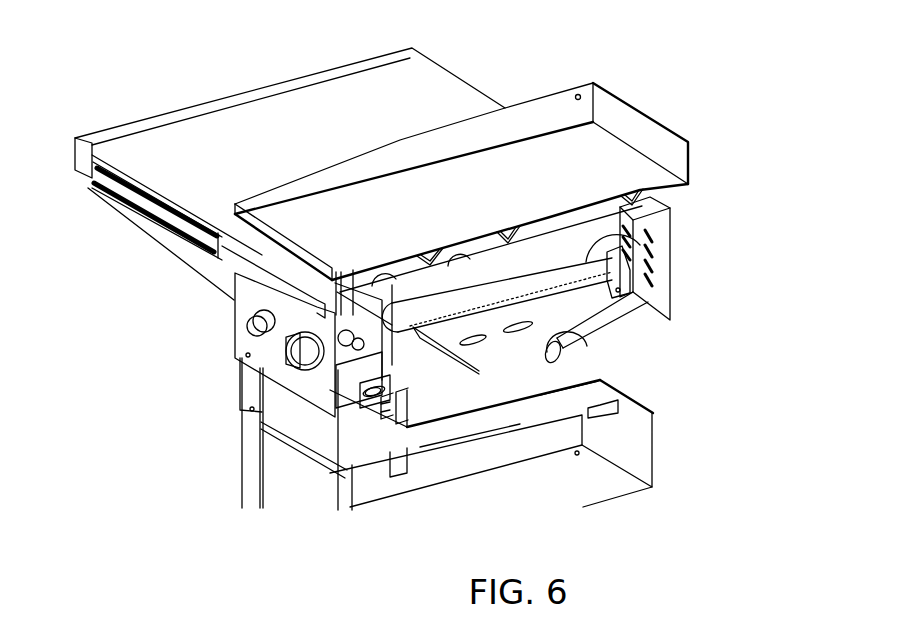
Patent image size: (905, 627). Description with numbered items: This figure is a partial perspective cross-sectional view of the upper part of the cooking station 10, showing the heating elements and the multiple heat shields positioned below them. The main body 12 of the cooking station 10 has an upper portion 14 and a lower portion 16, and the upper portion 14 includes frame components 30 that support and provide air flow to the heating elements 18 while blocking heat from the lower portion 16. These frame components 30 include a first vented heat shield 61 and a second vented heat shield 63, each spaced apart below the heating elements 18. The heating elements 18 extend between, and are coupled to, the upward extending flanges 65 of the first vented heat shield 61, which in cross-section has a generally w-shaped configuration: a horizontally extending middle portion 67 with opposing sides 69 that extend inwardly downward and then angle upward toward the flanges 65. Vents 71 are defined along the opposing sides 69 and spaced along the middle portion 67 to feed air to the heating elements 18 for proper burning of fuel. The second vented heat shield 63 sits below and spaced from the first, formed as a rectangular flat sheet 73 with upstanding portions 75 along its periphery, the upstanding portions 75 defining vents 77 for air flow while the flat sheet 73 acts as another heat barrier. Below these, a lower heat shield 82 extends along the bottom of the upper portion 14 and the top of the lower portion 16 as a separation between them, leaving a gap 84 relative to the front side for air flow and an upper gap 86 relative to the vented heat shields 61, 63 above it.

The cooking station 10 is at (714, 62).
The main body 12 is at (725, 138).
The upper portion 14 is at (227, 268).
The lower portion 16 is at (227, 410).
The heating elements 18 is at (630, 230).
The frame components 30 is at (682, 261).
The first vented heat shield 61 is at (620, 310).
The second vented heat shield 63 is at (654, 438).
The upward extending flanges 65 is at (667, 283).
The horizontally extending middle portion 67 is at (556, 333).
The opposing sides 69 is at (548, 364).
The vents 71 is at (460, 347).
The rectangular flat sheet 73 is at (568, 403).
The upstanding portions 75 is at (400, 425).
The vents 77 is at (380, 420).
The lower heat shield 82 is at (441, 434).
The gap 84 is at (359, 476).
The upper gap 86 is at (486, 425).